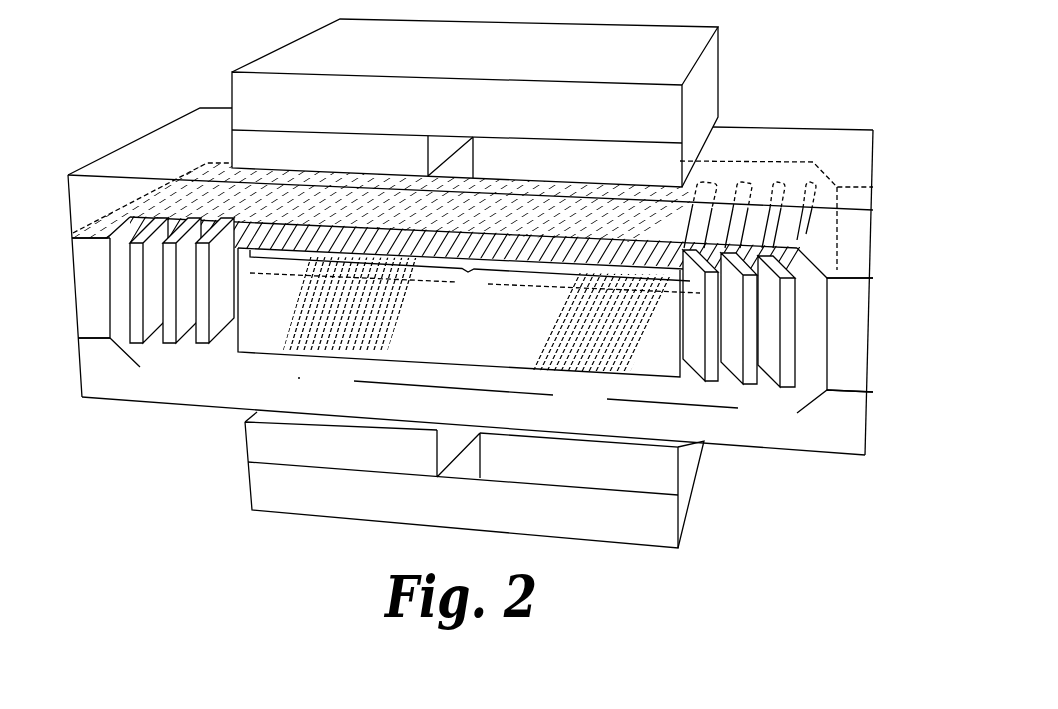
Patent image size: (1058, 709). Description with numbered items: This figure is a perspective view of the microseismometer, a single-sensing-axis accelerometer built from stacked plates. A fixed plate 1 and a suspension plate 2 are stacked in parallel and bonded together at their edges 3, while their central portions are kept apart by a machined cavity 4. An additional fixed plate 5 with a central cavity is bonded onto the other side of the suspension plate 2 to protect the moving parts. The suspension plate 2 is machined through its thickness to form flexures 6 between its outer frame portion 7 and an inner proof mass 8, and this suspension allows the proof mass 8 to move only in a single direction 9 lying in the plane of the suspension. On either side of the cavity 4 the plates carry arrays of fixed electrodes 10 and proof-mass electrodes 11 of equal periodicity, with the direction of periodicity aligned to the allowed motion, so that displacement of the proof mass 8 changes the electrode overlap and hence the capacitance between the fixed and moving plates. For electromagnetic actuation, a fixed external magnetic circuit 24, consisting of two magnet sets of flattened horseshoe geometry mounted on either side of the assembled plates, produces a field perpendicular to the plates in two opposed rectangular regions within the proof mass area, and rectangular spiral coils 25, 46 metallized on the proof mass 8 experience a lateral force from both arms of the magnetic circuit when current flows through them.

The fixed plate 1 is at (58, 183).
The suspension plate 2 is at (66, 246).
The edges 3 is at (103, 238).
The machined cavity 4 is at (240, 243).
The additional fixed plate 5 is at (70, 346).
The flexures 6 is at (298, 378).
The outer frame portion 7 is at (86, 275).
The proof mass 8 is at (471, 345).
The direction of motion 9 is at (370, 307).
The fixed electrodes 10 is at (356, 219).
The proof-mass electrodes 11 is at (475, 274).
The fixed external magnetic circuit 24 is at (257, 98).
The coils 25 is at (401, 367).
The rectangular spiral coils 46 is at (623, 383).